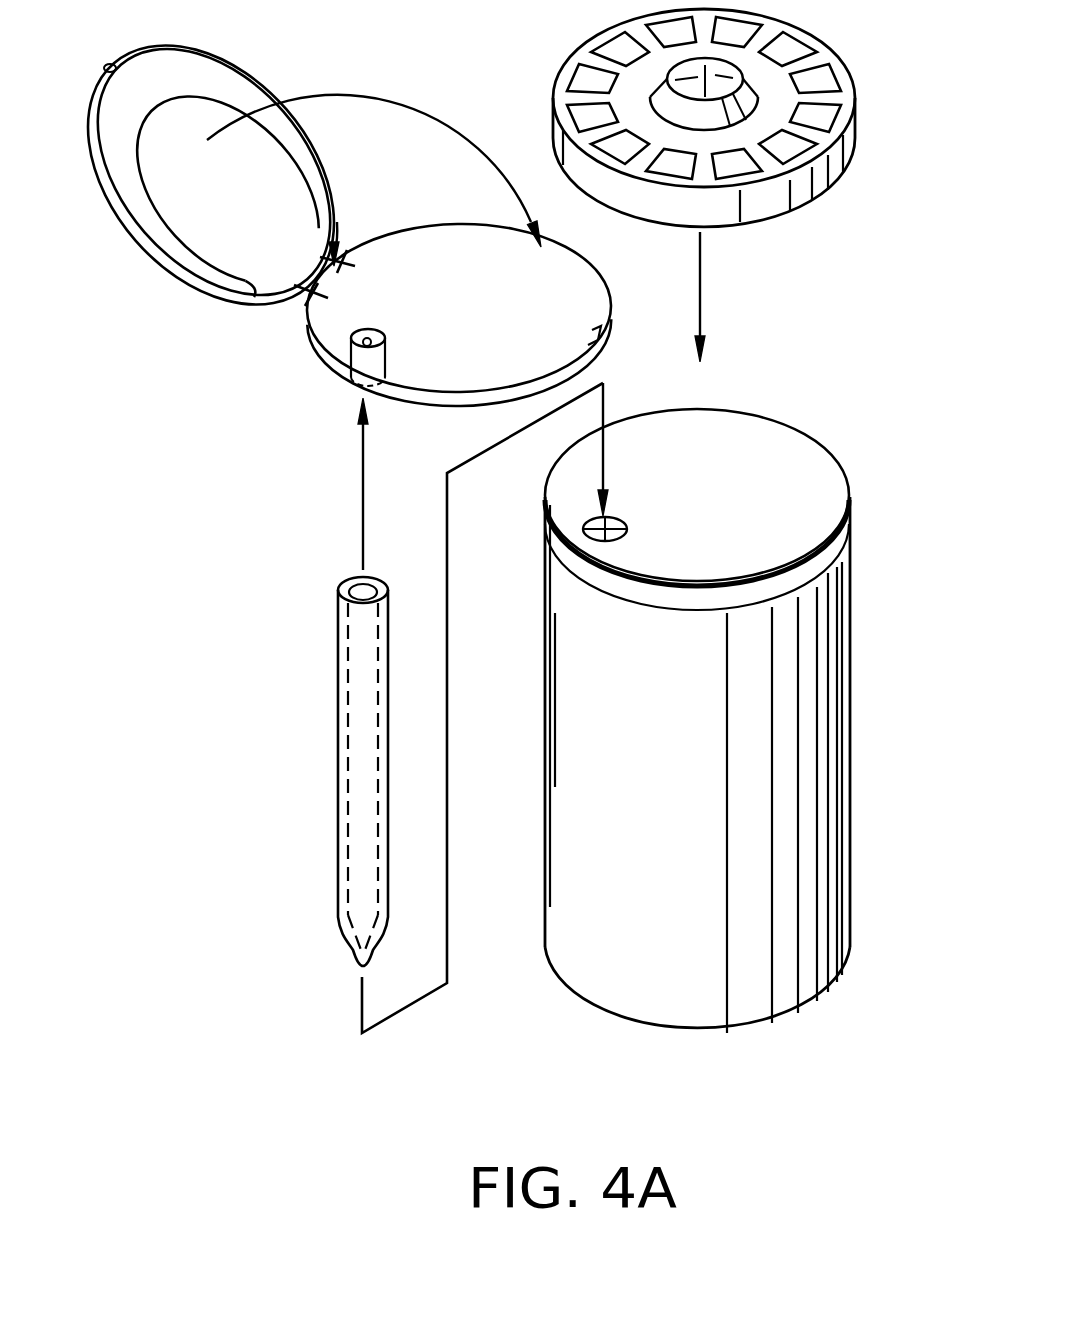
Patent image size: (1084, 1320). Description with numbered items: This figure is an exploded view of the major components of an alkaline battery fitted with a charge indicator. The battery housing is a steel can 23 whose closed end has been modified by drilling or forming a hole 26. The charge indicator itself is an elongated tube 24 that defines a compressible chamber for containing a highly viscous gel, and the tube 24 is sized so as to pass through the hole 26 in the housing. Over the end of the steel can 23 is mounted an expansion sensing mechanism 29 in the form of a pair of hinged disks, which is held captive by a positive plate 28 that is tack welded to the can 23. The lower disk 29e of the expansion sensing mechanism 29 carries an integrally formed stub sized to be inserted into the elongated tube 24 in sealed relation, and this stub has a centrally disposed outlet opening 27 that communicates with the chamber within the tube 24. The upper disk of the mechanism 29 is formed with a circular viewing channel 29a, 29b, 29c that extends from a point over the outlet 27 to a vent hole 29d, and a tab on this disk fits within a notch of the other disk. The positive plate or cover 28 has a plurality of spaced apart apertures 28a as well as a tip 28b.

The steel can 23 is at (830, 698).
The elongated tube 24 is at (341, 758).
The hole 26 is at (622, 529).
The outlet opening 27 is at (372, 340).
The positive plate 28 is at (750, 181).
The apertures 28a is at (812, 112).
The tip 28b is at (748, 82).
The expansion sensing mechanism 29 is at (431, 288).
The viewing channel 29a is at (206, 254).
The viewing channel 29b is at (210, 176).
The viewing channel 29c is at (286, 152).
The vent hole 29d is at (312, 203).
The lower disk 29e is at (490, 207).